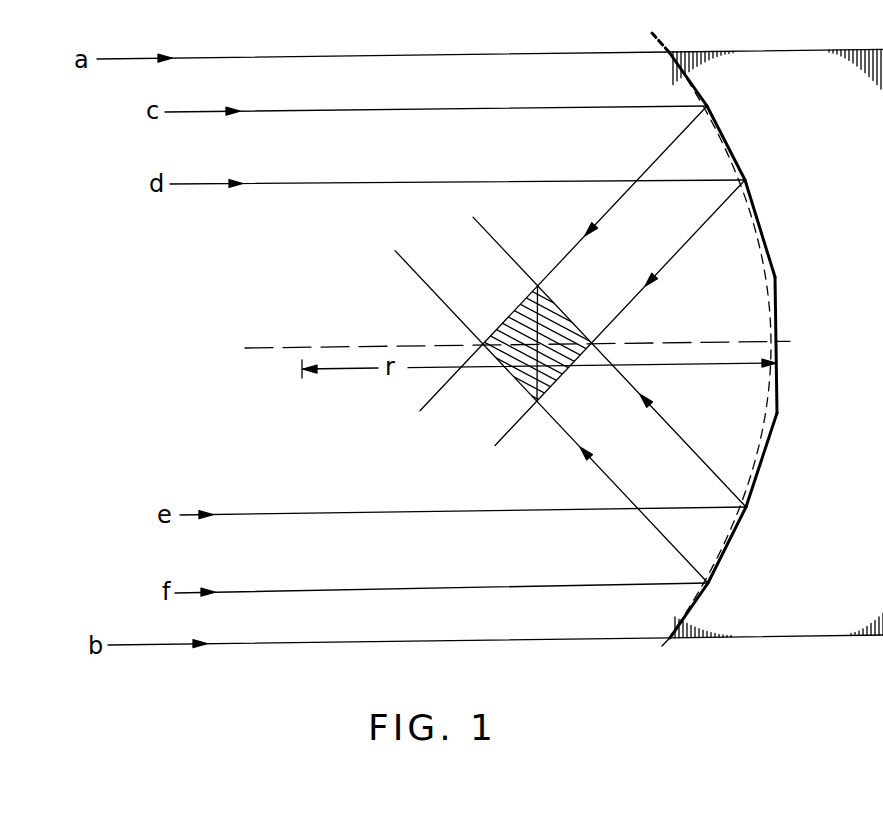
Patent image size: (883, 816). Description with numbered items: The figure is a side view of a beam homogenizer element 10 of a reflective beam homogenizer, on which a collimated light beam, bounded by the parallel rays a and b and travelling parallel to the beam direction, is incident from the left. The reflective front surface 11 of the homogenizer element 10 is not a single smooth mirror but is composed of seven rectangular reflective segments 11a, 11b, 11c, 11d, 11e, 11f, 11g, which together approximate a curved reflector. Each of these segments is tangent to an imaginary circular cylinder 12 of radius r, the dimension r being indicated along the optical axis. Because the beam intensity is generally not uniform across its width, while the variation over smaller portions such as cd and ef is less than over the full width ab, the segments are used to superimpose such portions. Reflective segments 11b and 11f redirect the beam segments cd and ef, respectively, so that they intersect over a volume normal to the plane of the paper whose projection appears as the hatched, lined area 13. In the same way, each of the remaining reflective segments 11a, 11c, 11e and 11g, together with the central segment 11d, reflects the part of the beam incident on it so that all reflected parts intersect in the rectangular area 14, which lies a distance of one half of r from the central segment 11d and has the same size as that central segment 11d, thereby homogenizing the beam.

The beam homogenizer element 10 is at (856, 398).
The reflective front surface 11 is at (761, 345).
The reflective segment 11a is at (692, 75).
The reflective segment 11b is at (722, 128).
The reflective segment 11c is at (758, 219).
The central segment 11d is at (777, 318).
The reflective segment 11e is at (763, 457).
The reflective segment 11f is at (722, 553).
The reflective segment 11g is at (695, 612).
The imaginary circular cylinder 12 is at (657, 652).
The lined area 13 is at (528, 345).
The rectangular area 14 is at (533, 311).